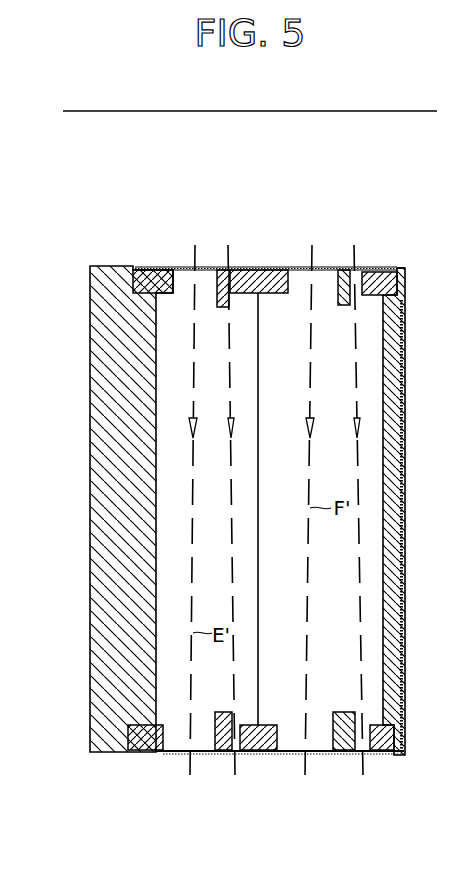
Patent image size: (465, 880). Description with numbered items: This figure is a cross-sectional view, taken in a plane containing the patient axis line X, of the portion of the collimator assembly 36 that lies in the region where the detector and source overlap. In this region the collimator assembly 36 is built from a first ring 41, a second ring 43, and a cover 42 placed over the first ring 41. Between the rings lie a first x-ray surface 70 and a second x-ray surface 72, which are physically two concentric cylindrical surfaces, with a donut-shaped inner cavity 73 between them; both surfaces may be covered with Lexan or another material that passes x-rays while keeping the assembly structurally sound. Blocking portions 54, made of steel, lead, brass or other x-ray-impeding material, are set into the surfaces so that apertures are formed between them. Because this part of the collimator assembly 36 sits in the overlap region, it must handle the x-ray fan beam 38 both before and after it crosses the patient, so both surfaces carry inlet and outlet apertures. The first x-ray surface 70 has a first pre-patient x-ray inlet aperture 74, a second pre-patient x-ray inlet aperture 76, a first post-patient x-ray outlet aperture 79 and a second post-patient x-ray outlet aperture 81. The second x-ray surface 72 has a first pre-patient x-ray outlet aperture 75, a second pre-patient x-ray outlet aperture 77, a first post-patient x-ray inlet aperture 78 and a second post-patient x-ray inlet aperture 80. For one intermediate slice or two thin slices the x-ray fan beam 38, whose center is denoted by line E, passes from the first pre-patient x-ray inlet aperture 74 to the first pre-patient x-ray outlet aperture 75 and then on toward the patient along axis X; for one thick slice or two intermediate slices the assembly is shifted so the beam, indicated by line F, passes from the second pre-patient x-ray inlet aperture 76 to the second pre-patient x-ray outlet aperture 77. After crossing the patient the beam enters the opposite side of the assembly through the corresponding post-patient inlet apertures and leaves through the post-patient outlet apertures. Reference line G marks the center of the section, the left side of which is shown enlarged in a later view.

The axis line X is at (98, 112).
The collimator assembly 36 is at (66, 418).
The x-ray fan beam 38 is at (232, 343).
The first ring 41 is at (388, 560).
The cover 42 is at (406, 527).
The second ring 43 is at (104, 598).
The blocking portions 54 is at (226, 270).
The first x-ray surface 70 is at (372, 756).
The second x-ray surface 72 is at (380, 268).
The inner cavity 73 is at (343, 680).
The first pre-patient x-ray inlet aperture 74 is at (242, 754).
The first pre-patient x-ray outlet aperture 75 is at (233, 262).
The second pre-patient x-ray inlet aperture 76 is at (350, 754).
The second pre-patient x-ray outlet aperture 77 is at (360, 264).
The first post-patient x-ray inlet aperture 78 is at (190, 266).
The first post-patient x-ray outlet aperture 79 is at (178, 756).
The second post-patient x-ray inlet aperture 80 is at (318, 266).
The second post-patient x-ray outlet aperture 81 is at (308, 754).
The reference line G is at (259, 557).
The beam center line E is at (234, 676).
The beam line F is at (360, 595).